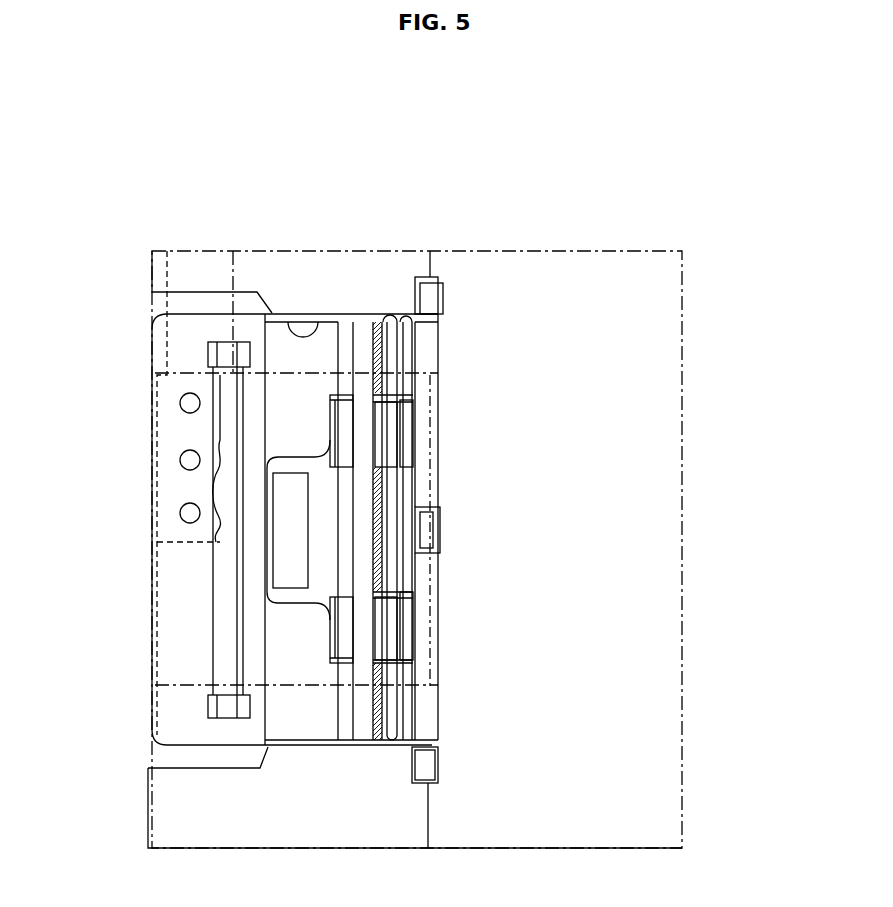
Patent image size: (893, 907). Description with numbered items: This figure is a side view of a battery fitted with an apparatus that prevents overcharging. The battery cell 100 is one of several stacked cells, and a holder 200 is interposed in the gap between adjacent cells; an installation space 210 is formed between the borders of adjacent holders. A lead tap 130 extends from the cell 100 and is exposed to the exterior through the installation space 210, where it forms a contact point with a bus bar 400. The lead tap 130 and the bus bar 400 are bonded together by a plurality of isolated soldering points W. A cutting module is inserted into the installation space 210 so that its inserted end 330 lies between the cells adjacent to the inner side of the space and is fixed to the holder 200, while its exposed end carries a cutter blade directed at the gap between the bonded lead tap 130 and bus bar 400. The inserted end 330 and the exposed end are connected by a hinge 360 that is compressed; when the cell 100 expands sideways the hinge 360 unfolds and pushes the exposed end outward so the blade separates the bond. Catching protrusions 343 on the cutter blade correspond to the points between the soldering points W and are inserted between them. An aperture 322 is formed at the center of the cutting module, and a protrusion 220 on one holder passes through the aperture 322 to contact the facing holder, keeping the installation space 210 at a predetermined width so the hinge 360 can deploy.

The battery cell 100 is at (623, 317).
The holder 200 is at (375, 252).
The installation space 210 is at (286, 332).
The protrusion 220 is at (293, 552).
The aperture 322 is at (300, 460).
The inserted end 330 is at (425, 620).
The catching protrusion 343 is at (212, 472).
The hinge 360 is at (462, 717).
The bus bar 400 is at (162, 298).
The lead tap 130 is at (150, 592).
The soldering point W is at (180, 403).